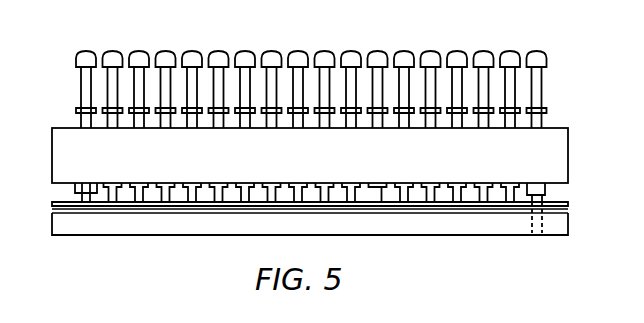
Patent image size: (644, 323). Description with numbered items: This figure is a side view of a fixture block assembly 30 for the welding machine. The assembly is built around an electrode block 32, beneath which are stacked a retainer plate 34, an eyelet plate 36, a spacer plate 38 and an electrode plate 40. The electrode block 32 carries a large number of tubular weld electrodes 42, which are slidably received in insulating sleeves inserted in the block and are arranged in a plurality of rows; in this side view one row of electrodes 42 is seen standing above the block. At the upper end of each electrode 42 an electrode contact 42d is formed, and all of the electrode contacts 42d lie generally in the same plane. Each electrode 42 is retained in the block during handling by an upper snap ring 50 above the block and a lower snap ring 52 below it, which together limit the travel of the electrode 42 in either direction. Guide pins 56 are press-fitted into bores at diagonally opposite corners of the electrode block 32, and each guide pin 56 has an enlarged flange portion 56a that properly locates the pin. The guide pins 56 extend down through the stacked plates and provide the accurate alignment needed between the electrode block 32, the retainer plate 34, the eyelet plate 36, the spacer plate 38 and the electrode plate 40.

The fixture block assembly 30 is at (519, 38).
The electrode block 32 is at (562, 136).
The retainer plate 34 is at (562, 203).
The eyelet plate 36 is at (564, 208).
The spacer plate 38 is at (556, 215).
The electrode plate 40 is at (552, 233).
The tubular weld electrode 42 is at (543, 90).
The electrode contact 42d is at (188, 50).
The upper snap ring 50 is at (75, 111).
The lower snap ring 52 is at (240, 185).
The guide pin 56 is at (530, 206).
The enlarged flange portion 56a is at (540, 183).